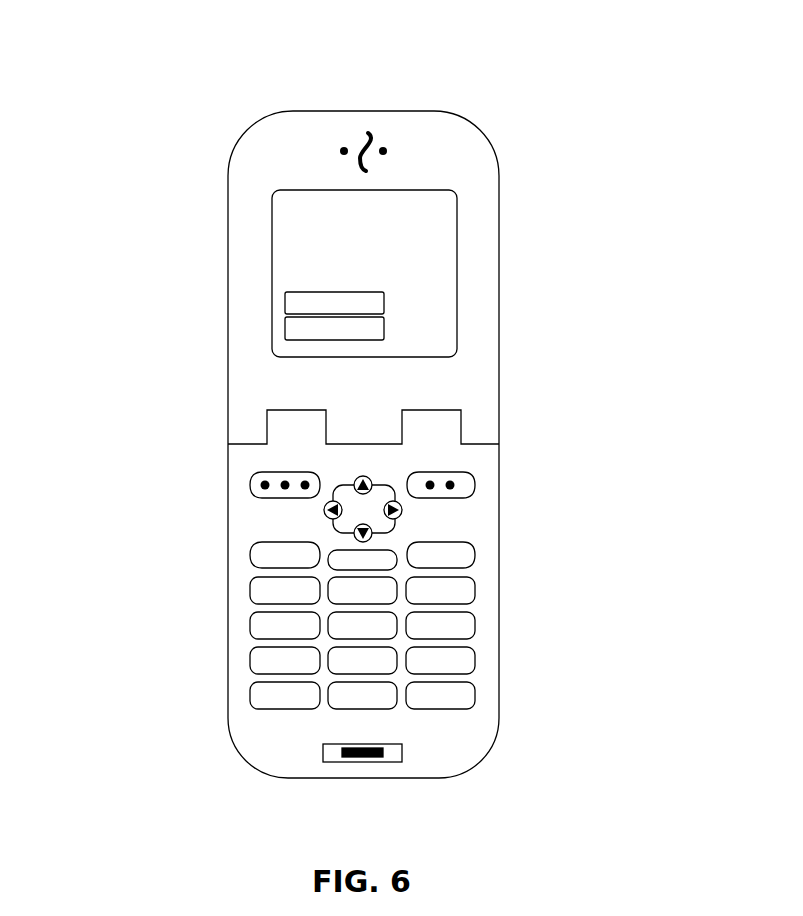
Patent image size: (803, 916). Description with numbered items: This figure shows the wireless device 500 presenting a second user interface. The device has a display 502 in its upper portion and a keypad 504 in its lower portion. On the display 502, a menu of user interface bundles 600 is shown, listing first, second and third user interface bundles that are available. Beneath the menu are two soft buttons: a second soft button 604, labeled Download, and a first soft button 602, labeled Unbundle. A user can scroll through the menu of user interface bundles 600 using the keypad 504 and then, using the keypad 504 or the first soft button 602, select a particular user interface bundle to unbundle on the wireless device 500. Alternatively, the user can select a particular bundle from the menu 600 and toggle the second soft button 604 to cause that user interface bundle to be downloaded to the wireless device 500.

The wireless device 500 is at (160, 92).
The display 502 is at (428, 190).
The menu of user interface bundles 600 is at (423, 265).
The second soft button 604 is at (285, 299).
The first soft button 602 is at (285, 329).
The keypad 504 is at (478, 510).